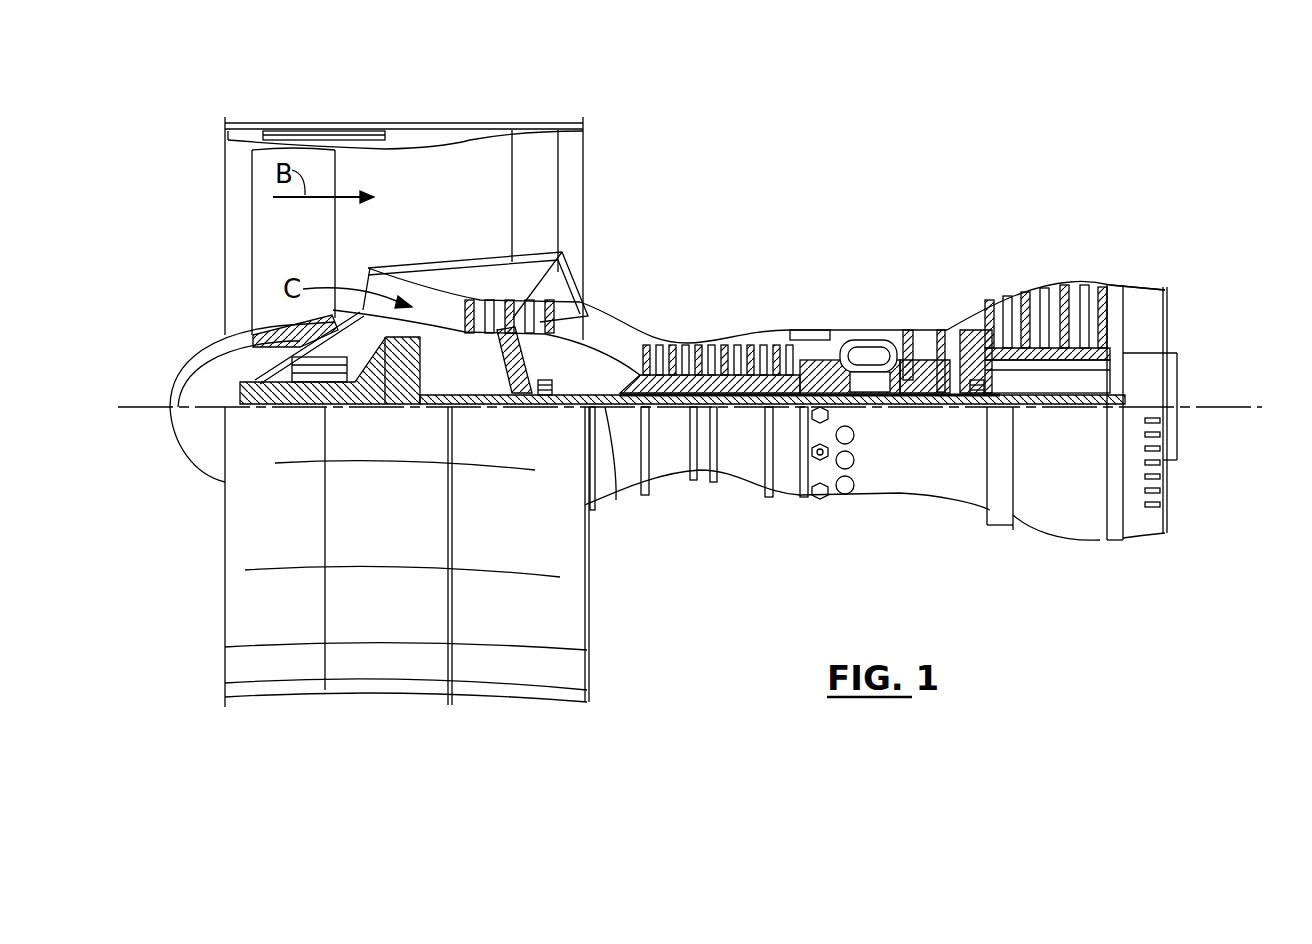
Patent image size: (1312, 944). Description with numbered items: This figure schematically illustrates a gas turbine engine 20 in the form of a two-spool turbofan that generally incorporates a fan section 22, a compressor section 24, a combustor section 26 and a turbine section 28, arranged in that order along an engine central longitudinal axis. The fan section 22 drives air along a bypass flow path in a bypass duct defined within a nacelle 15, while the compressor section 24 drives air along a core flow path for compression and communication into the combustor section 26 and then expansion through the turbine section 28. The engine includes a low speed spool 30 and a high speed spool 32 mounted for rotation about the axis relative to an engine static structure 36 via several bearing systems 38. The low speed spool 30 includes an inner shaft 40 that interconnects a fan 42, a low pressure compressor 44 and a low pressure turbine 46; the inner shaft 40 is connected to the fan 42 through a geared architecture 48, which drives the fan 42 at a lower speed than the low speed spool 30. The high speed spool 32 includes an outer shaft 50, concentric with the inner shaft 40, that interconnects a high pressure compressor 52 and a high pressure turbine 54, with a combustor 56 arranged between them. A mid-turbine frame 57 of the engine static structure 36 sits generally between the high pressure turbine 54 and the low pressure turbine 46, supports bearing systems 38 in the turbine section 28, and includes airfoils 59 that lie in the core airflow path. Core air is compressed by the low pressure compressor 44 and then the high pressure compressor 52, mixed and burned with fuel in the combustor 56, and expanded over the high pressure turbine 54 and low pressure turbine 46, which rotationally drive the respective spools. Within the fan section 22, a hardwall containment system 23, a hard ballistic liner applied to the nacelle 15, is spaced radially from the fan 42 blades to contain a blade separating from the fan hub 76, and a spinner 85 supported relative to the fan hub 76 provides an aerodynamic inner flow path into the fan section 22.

The nacelle 15 is at (406, 126).
The gas turbine engine 20 is at (870, 168).
The fan section 22 is at (333, 108).
The hardwall containment system 23 is at (348, 130).
The compressor section 24 is at (638, 310).
The combustor section 26 is at (858, 298).
The turbine section 28 is at (1012, 262).
The low speed spool 30 is at (745, 415).
The high speed spool 32 is at (790, 362).
The engine static structure 36 is at (785, 415).
The bearing systems 38 is at (545, 395).
The inner shaft 40 is at (616, 500).
The fan 42 is at (311, 250).
The low pressure compressor 44 is at (507, 312).
The low pressure turbine 46 is at (1048, 300).
The geared architecture 48 is at (412, 390).
The outer shaft 50 is at (870, 395).
The high pressure compressor 52 is at (718, 372).
The high pressure turbine 54 is at (925, 324).
The combustor 56 is at (866, 350).
The mid-turbine frame 57 is at (972, 312).
The airfoils 59 is at (1000, 372).
The fan hub 76 is at (272, 372).
The spinner 85 is at (178, 445).